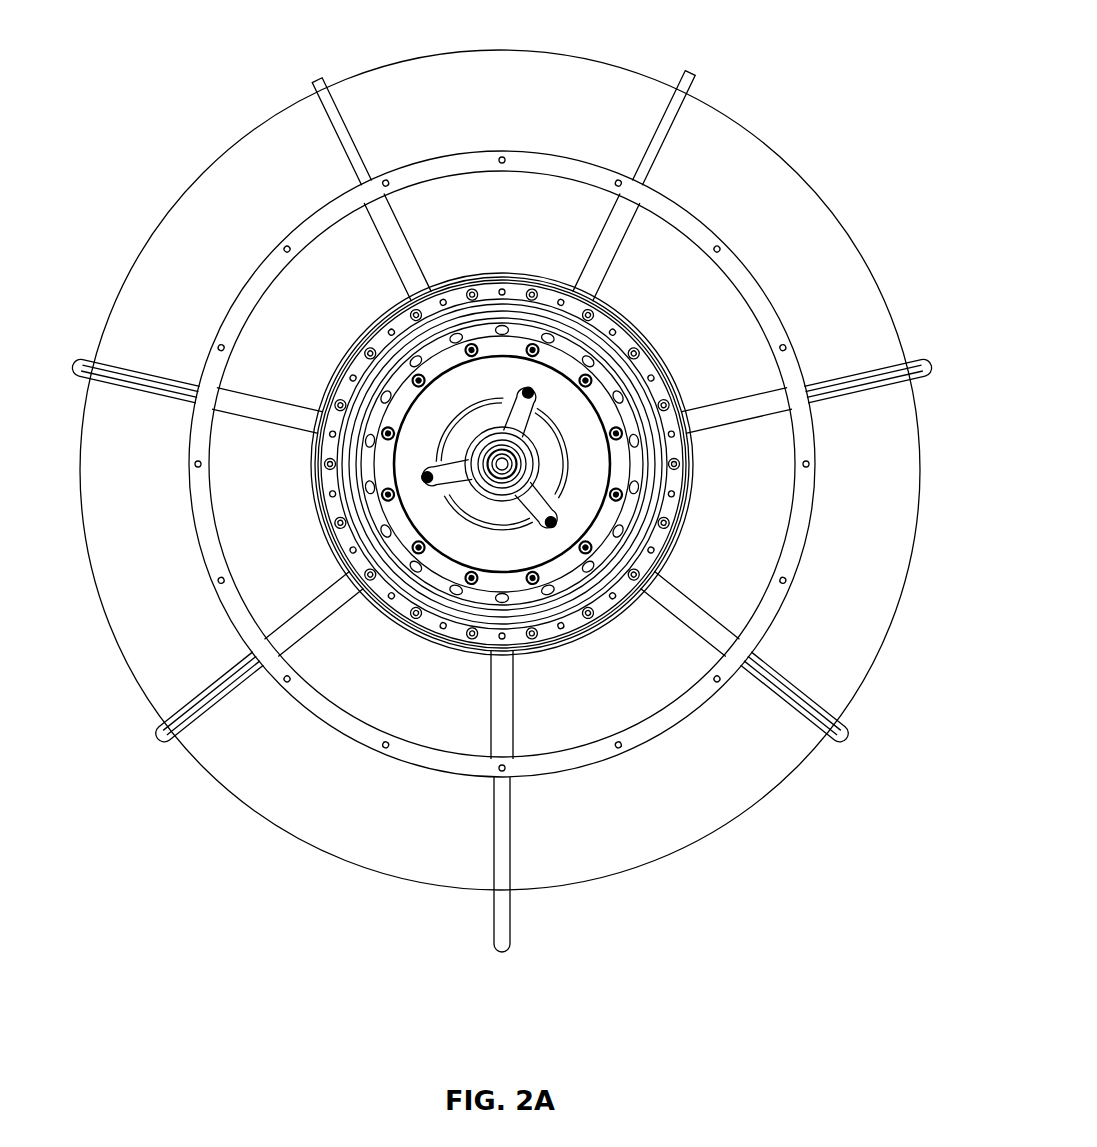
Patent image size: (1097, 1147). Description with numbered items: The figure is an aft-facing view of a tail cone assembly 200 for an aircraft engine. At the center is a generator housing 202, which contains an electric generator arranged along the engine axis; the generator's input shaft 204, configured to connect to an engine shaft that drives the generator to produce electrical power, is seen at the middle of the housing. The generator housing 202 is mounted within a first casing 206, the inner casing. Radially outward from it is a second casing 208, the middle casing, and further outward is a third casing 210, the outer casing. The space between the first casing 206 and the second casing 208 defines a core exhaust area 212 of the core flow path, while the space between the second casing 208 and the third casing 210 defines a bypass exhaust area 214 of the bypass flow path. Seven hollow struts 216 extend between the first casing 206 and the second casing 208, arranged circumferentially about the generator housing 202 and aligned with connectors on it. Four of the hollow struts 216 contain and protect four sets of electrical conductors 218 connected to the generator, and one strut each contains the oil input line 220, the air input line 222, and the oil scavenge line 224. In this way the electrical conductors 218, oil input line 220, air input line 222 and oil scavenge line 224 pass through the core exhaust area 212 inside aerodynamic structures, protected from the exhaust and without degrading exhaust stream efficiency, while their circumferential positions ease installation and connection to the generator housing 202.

The tail cone assembly 200 is at (855, 46).
The generator housing 202 is at (480, 368).
The input shaft 204 is at (487, 462).
The first casing 206 is at (367, 329).
The second casing 208 is at (254, 290).
The third casing 210 is at (236, 150).
The core exhaust area 212 is at (731, 361).
The bypass exhaust area 214 is at (841, 292).
The hollow struts 216 is at (406, 236).
The electrical conductors 218 is at (80, 360).
The oil input line 220 is at (316, 80).
The air input line 222 is at (692, 80).
The oil scavenge line 224 is at (510, 918).